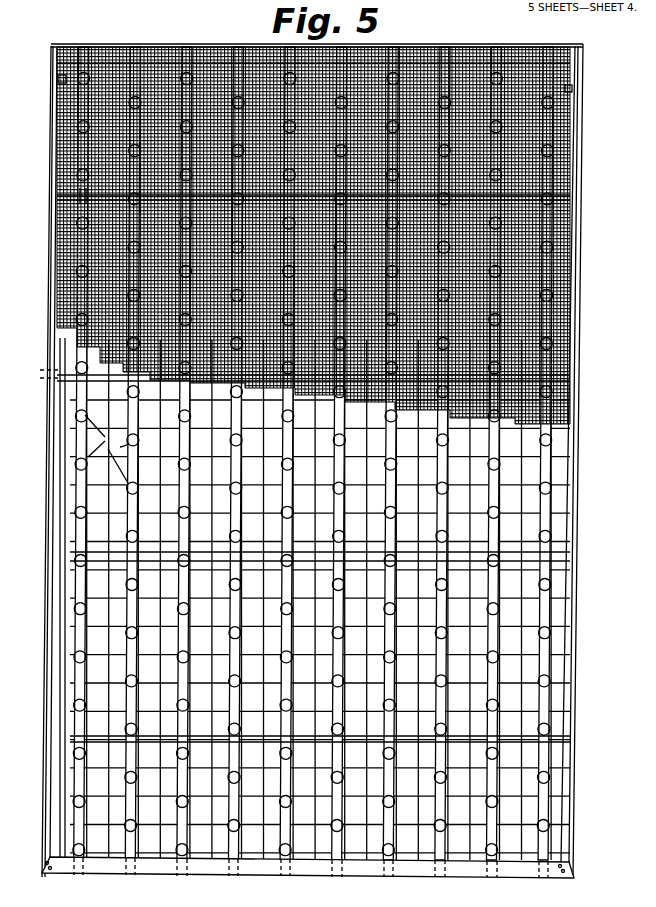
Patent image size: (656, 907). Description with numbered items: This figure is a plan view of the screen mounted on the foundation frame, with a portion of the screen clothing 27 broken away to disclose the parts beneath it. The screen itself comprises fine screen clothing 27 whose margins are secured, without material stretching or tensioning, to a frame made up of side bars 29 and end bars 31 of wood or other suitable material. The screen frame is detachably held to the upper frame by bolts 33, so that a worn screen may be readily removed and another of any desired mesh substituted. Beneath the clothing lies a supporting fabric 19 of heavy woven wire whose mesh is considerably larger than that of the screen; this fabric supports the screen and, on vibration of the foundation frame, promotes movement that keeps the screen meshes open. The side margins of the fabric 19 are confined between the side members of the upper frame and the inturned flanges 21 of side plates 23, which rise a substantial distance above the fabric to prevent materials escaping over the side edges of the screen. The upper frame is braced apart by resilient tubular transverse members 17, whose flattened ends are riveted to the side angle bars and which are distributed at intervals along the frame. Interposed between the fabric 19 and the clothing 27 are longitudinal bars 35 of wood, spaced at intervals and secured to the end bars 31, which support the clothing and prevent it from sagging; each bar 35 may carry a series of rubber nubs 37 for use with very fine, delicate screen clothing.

The transverse brace bars 17 is at (75, 200).
The supporting fabric 19 is at (131, 396).
The inturned flanges 21 is at (78, 431).
The side plates 23 is at (50, 248).
The screen clothing 27 is at (83, 194).
The side bars 29 is at (53, 403).
The end bars 31 is at (198, 870).
The bolts 33 is at (58, 79).
The longitudinal bars 35 is at (176, 673).
The rubber nubs 37 is at (107, 449).